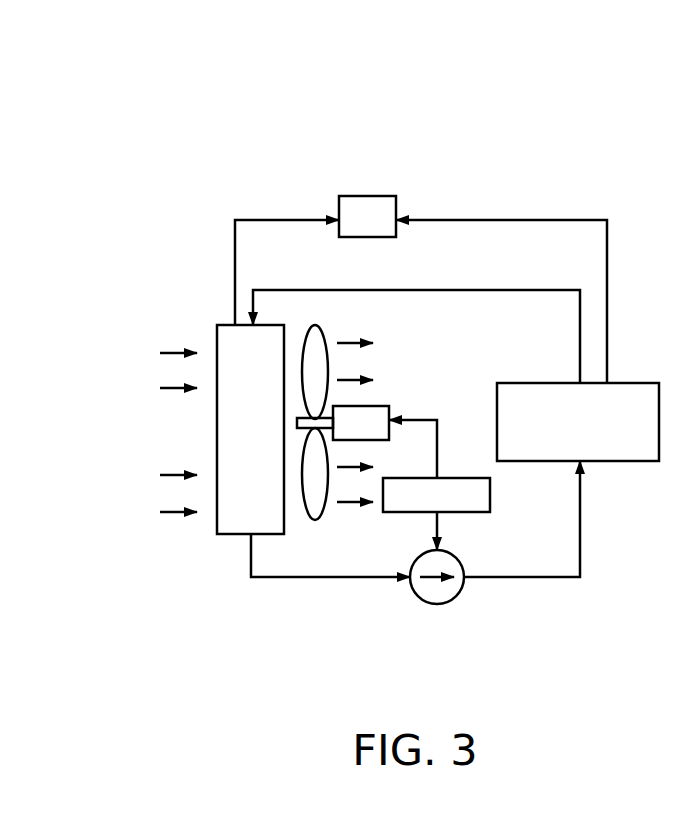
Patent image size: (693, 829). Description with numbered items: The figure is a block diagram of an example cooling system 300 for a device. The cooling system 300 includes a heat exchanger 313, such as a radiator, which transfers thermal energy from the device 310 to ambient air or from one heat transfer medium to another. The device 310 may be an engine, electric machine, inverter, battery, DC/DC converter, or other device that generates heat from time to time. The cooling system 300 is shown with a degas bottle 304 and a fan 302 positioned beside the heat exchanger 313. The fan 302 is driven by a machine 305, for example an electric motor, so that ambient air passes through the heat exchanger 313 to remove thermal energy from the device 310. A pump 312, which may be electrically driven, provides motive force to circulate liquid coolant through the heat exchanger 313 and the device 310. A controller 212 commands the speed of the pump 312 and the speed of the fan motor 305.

The cooling system 300 is at (178, 92).
The degas bottle 304 is at (367, 216).
The heat exchanger 313 is at (232, 442).
The fan 302 is at (328, 388).
The machine 305 is at (347, 433).
The controller 212 is at (436, 495).
The device 310 is at (560, 434).
The pump 312 is at (441, 604).